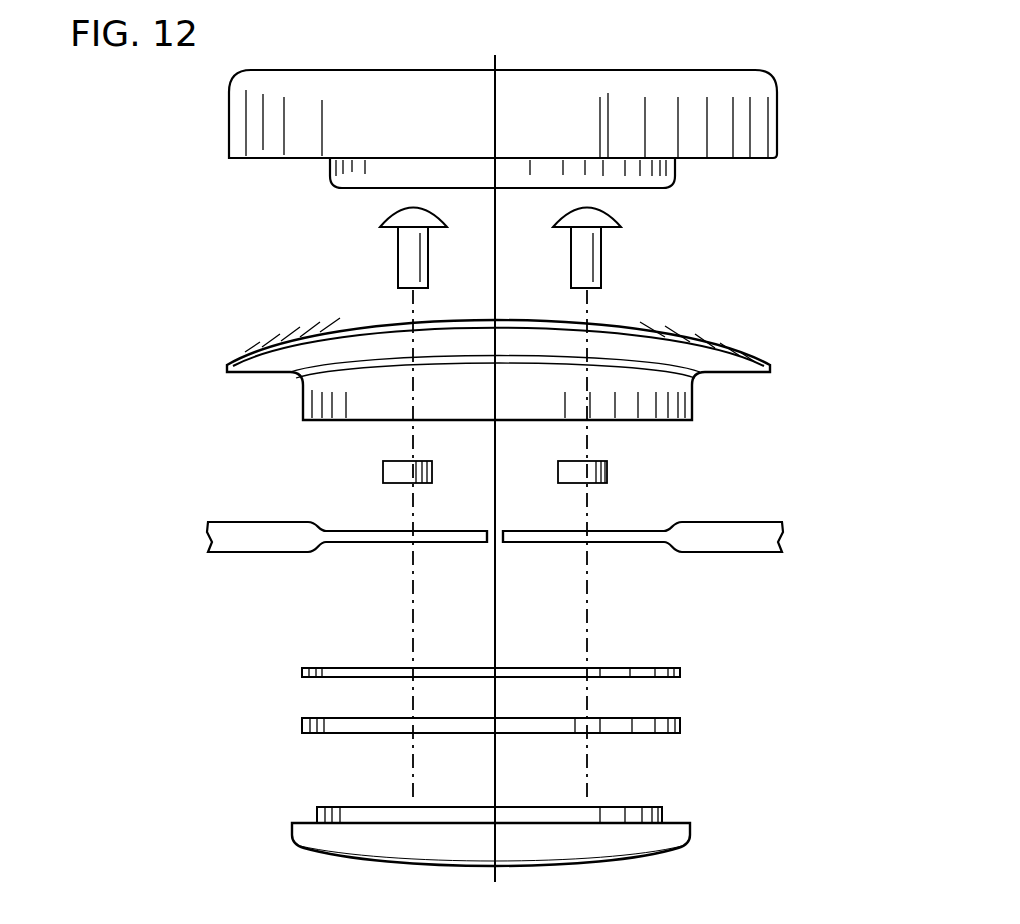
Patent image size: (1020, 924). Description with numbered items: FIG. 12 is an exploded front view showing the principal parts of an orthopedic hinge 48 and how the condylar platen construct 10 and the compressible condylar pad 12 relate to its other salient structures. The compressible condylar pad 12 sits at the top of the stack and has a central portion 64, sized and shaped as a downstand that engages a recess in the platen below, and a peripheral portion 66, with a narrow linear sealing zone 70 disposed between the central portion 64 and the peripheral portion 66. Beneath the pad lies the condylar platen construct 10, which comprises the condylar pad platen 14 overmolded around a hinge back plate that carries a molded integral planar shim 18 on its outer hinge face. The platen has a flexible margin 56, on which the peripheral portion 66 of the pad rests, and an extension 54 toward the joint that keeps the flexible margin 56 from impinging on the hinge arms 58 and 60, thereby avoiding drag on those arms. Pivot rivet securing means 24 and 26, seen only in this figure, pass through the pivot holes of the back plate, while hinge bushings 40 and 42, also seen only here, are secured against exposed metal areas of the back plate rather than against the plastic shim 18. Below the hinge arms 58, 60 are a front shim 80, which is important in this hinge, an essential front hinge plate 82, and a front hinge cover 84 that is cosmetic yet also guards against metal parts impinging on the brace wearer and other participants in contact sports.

The condylar platen construct 10 is at (501, 381).
The compressible condylar pad 12 is at (237, 146).
The condylar pad platen 14 is at (395, 400).
The molded integral planar shim 18 is at (668, 422).
The pivot rivet securing means 24 is at (405, 253).
The pivot rivet securing means 26 is at (602, 253).
The hinge bushing 40 is at (383, 473).
The hinge bushing 42 is at (608, 468).
The orthopedic hinge 48 is at (258, 543).
The extension 54 is at (302, 407).
The flexible margin 56 is at (650, 329).
The hinge arm 58 is at (457, 543).
The hinge arm 60 is at (555, 543).
The central portion 64 is at (598, 168).
The peripheral portion 66 is at (275, 117).
The narrow linear sealing zone 70 is at (318, 160).
The front shim 80 is at (333, 680).
The front hinge plate 82 is at (673, 733).
The front hinge cover 84 is at (333, 833).